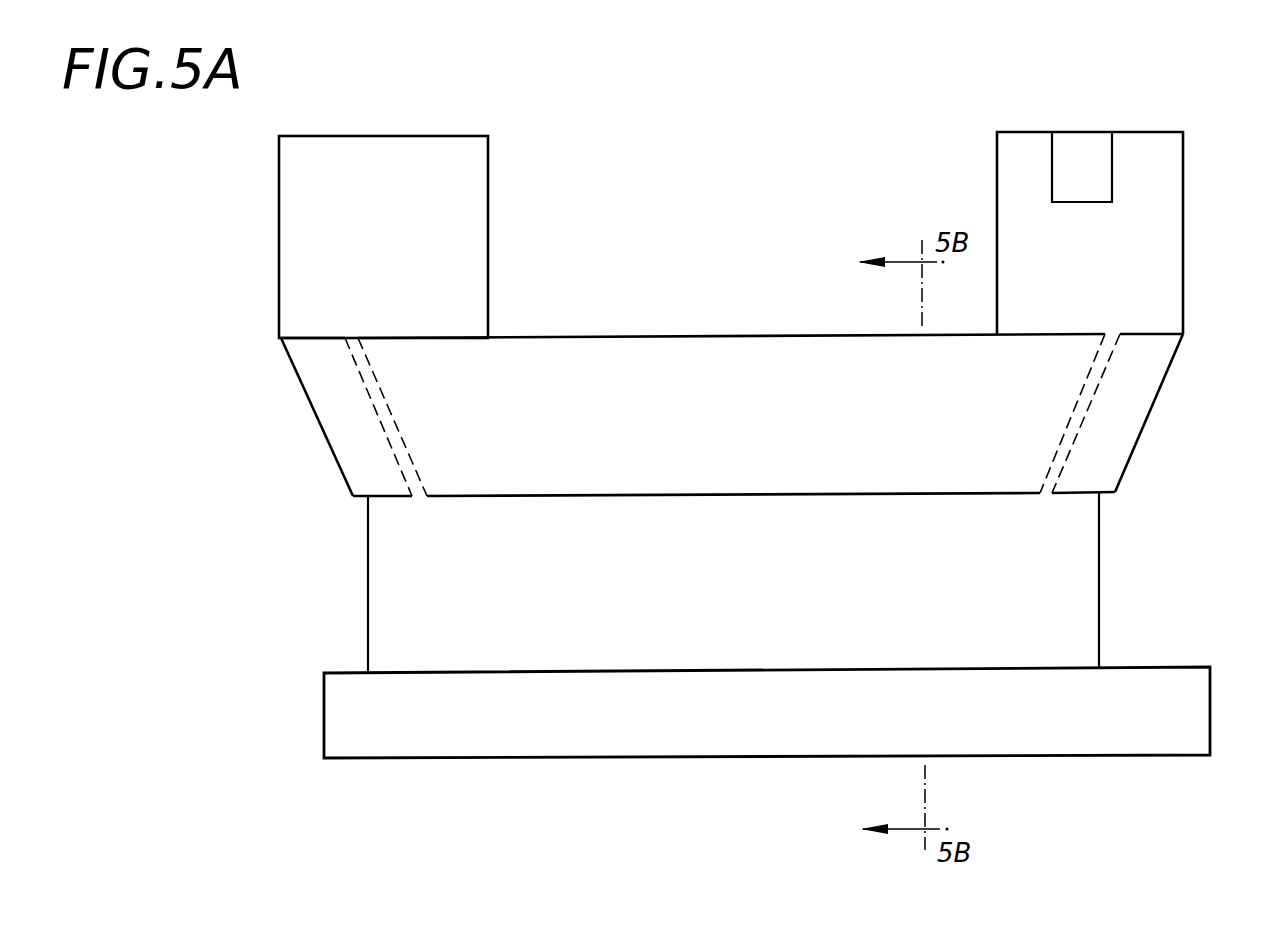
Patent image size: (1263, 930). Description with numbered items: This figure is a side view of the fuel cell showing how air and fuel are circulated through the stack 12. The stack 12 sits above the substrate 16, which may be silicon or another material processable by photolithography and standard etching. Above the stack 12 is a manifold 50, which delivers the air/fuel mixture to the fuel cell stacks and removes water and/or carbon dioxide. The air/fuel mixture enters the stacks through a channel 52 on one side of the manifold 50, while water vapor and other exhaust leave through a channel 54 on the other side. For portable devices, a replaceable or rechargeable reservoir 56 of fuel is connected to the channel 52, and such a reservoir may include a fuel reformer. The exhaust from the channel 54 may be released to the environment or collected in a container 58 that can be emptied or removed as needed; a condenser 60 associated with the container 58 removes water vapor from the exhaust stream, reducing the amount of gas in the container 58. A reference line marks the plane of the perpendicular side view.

The stack 12 is at (1128, 562).
The substrate 16 is at (1174, 726).
The manifold 50 is at (603, 337).
The channel 52 is at (368, 390).
The channel 54 is at (1100, 375).
The reservoir 56 is at (434, 213).
The container 58 is at (1175, 211).
The condenser 60 is at (1101, 178).